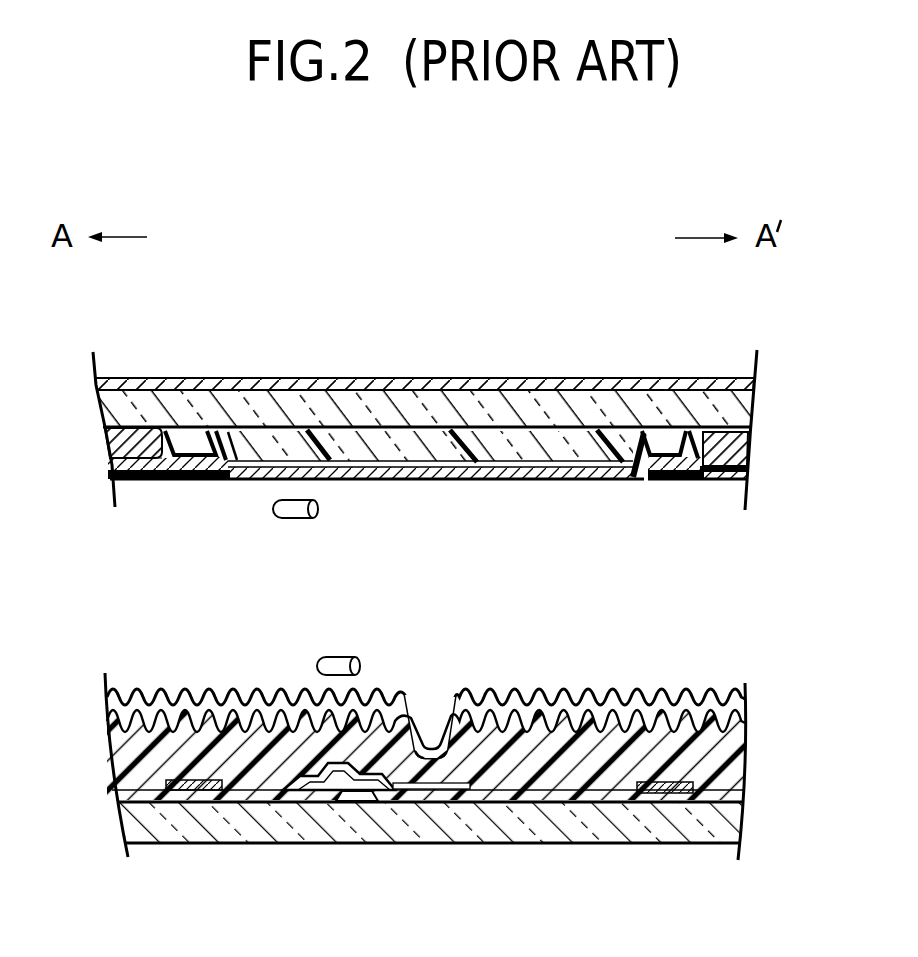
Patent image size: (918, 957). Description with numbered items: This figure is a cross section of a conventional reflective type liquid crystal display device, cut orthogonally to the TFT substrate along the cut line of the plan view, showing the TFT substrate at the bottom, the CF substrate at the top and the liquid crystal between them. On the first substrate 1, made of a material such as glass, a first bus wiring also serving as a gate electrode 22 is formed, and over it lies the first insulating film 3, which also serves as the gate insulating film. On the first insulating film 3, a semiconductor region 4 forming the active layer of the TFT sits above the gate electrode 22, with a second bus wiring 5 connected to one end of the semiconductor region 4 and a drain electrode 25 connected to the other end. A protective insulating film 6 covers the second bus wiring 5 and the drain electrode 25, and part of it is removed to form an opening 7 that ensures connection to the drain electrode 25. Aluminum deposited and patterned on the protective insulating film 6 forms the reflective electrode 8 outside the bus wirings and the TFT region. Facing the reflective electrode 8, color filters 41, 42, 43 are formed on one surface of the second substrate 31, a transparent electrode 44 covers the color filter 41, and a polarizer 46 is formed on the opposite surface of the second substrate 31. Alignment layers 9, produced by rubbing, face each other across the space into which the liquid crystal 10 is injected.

The first substrate 1 is at (160, 843).
The first insulating film 3 is at (653, 803).
The semiconductor region 4 is at (383, 787).
The second bus wiring 5 is at (214, 793).
The protective insulating film 6 is at (573, 780).
The opening 7 is at (457, 740).
The reflective electrode 8 is at (600, 703).
The alignment layers 9 is at (477, 480).
The liquid crystal 10 is at (361, 666).
The gate electrode 22 is at (343, 800).
The drain electrode 25 is at (438, 785).
The second substrate 31 is at (287, 403).
The color filter 41 is at (717, 447).
The color filter 42 is at (553, 447).
The color filter 43 is at (130, 428).
The transparent electrode 44 is at (425, 463).
The polarizer 46 is at (350, 387).